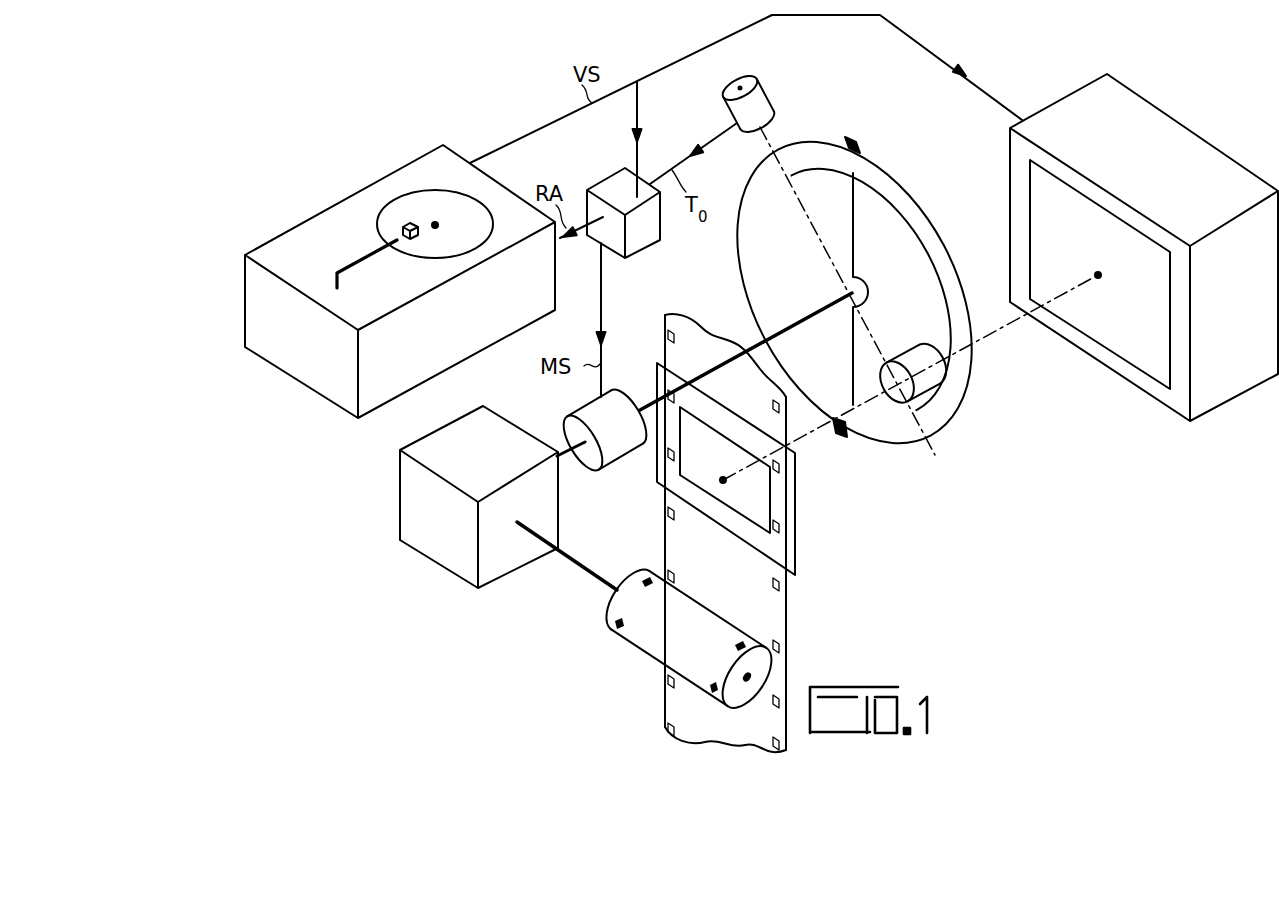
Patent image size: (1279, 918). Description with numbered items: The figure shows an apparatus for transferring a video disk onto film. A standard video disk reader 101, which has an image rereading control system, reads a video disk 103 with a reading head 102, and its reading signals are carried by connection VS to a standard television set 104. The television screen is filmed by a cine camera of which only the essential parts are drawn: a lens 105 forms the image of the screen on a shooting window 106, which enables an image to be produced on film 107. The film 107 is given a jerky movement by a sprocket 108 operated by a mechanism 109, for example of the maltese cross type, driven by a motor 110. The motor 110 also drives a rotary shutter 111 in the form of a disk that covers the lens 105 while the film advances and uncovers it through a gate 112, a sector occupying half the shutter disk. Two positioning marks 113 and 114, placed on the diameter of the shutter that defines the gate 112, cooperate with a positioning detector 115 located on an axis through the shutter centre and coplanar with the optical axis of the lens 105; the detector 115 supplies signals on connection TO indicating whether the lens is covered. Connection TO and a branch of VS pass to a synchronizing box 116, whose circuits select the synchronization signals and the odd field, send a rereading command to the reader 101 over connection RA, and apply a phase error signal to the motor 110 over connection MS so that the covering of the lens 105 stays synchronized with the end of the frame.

The video disk reader 101 is at (265, 360).
The reading head 102 is at (388, 232).
The video disk 103 is at (413, 248).
The television set 104 is at (1221, 406).
The lens 105 is at (940, 405).
The shooting window 106 is at (797, 516).
The film 107 is at (787, 604).
The sprocket 108 is at (633, 645).
The mechanism 109 is at (433, 563).
The motor 110 is at (613, 464).
The rotary shutter 111 is at (742, 292).
The gate 112 is at (902, 197).
The positioning mark 113 is at (860, 143).
The positioning mark 114 is at (840, 437).
The positioning detector 115 is at (766, 97).
The synchronizing box 116 is at (638, 252).